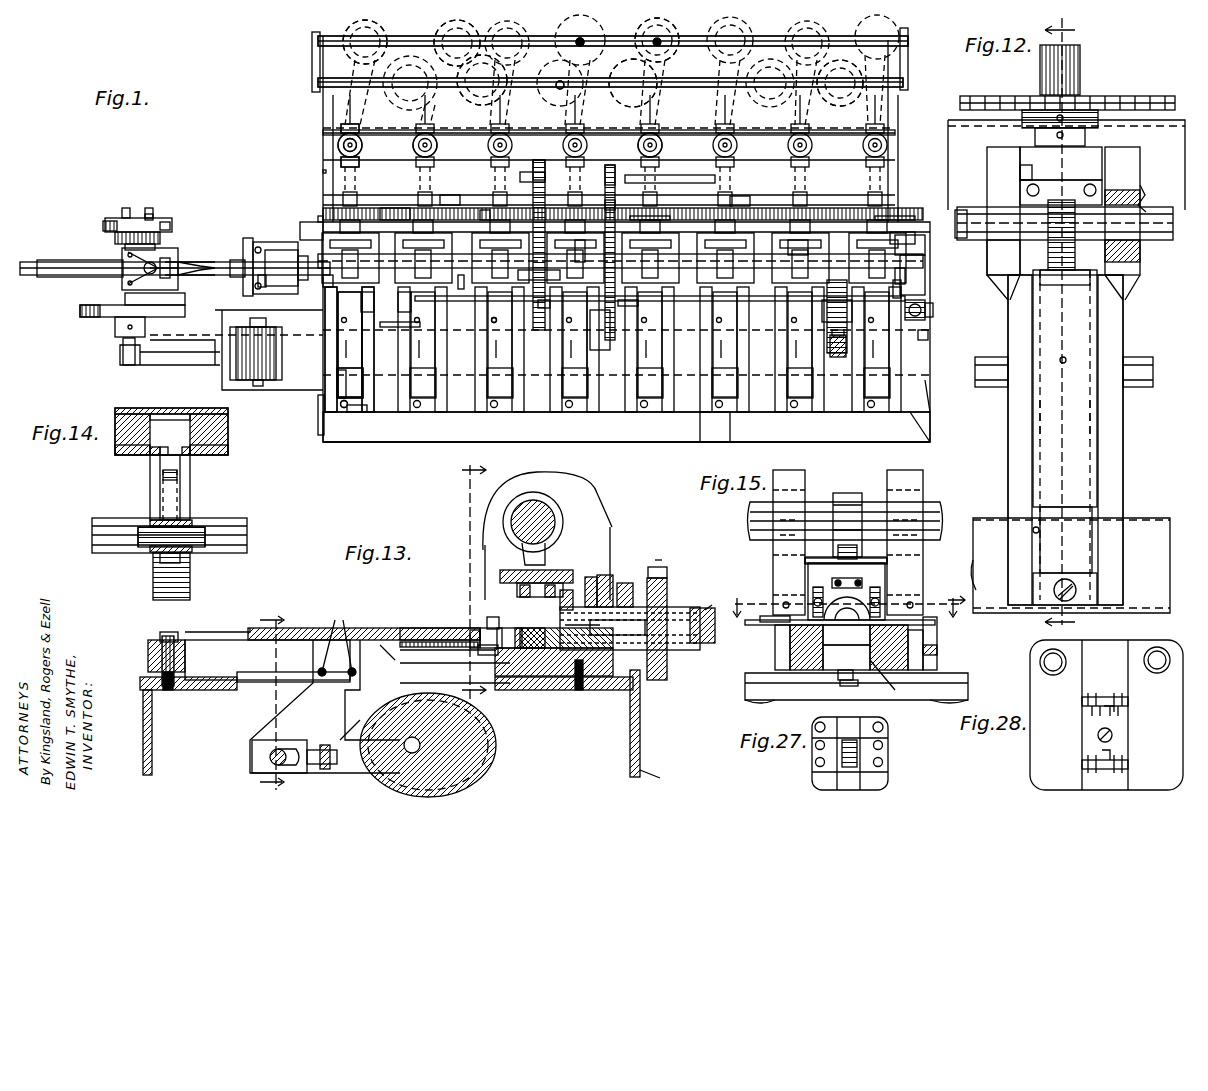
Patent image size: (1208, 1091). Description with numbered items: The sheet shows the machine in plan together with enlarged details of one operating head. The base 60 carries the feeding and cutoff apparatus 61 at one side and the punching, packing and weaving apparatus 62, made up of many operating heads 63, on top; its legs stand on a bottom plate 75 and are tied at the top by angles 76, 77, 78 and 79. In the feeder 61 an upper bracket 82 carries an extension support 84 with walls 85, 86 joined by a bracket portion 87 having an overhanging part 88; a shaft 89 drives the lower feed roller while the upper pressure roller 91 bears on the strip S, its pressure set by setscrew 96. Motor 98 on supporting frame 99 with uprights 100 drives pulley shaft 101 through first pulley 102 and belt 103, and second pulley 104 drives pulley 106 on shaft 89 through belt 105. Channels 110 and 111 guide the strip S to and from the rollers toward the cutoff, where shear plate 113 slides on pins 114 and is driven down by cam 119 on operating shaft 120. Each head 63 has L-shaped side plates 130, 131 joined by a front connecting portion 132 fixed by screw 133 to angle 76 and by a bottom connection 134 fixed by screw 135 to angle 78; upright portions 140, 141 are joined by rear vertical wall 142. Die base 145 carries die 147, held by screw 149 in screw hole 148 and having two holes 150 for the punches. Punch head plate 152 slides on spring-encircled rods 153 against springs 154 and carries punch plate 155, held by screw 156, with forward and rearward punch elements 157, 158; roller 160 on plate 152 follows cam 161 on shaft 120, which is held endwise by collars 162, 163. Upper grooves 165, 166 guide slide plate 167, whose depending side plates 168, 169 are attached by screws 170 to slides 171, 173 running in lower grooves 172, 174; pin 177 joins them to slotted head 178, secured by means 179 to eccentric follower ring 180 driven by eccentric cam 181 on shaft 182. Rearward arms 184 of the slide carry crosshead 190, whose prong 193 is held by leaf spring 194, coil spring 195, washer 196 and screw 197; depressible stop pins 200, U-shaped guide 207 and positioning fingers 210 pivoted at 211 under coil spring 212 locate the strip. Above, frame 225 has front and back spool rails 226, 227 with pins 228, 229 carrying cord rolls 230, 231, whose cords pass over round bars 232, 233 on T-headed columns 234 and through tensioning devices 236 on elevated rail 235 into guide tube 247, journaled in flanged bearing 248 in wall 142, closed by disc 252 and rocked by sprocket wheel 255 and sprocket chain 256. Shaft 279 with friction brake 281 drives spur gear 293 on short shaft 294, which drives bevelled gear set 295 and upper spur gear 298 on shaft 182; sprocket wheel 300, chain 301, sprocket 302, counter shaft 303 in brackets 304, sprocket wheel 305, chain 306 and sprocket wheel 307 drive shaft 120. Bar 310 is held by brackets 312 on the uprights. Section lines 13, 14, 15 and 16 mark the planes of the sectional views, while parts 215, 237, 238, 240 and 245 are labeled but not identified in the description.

In FIG. 1, the strip S is at (175, 255).
In FIG. 13, the strip S is at (452, 631).
In FIG. 12, the section line 13 is at (1065, 328).
In FIG. 13, the section line 14 is at (264, 696).
In FIG. 13, the section line 15 is at (467, 579).
In FIG. 12, the section line 16 is at (955, 593).
In FIG. 15, the section line 16 is at (847, 602).
In FIG. 1, the base 60 is at (340, 442).
In FIG. 13, the base 60 is at (656, 774).
In FIG. 15, the base 60 is at (740, 688).
In FIG. 1, the feeding and cutoff apparatus 61 is at (225, 220).
In FIG. 1, the punching, packing, and weaving apparatus 62 is at (325, 185).
In FIG. 13, the punching, packing, and weaving apparatus 62 is at (442, 565).
In FIG. 15, the punching, packing, and weaving apparatus 62 is at (750, 580).
In FIG. 1, the operating head 63 is at (626, 318).
In FIG. 12, the operating head 63 is at (1125, 325).
In FIG. 13, the operating head 63 is at (610, 522).
In FIG. 15, the operating head 63 is at (932, 499).
In FIG. 1, the bottom plate 75 is at (676, 400).
In FIG. 1, the angle 76 is at (709, 427).
In FIG. 12, the angle 76 is at (1145, 520).
In FIG. 13, the angle 76 is at (143, 762).
In FIG. 1, the angle 77 is at (925, 385).
In FIG. 1, the angle 78 is at (453, 190).
In FIG. 12, the angle 78 is at (1180, 122).
In FIG. 13, the angle 78 is at (640, 735).
In FIG. 15, the angle 78 is at (760, 692).
In FIG. 1, the angle 79 is at (318, 402).
In FIG. 1, the upper bracket 82 is at (250, 238).
In FIG. 1, the extension support 84 is at (195, 260).
In FIG. 1, the vertical wall 85 is at (190, 310).
In FIG. 1, the vertical wall 86 is at (165, 256).
In FIG. 1, the bracket portion 87 is at (130, 275).
In FIG. 1, the overhanging part 88 is at (160, 250).
In FIG. 1, the shaft 89 is at (150, 208).
In FIG. 1, the upper pressure roller 91 is at (190, 265).
In FIG. 1, the setscrew 96 is at (125, 262).
In FIG. 1, the motor 98 is at (240, 358).
In FIG. 1, the supporting frame 99 is at (170, 365).
In FIG. 1, the vertical uprights 100 is at (170, 345).
In FIG. 1, the pulley shaft 101 is at (127, 208).
In FIG. 1, the first pulley 102 is at (115, 325).
In FIG. 1, the belt 103 is at (80, 312).
In FIG. 1, the second pulley 104 is at (110, 218).
In FIG. 1, the belt 105 is at (103, 225).
In FIG. 1, the pulley 106 is at (167, 220).
In FIG. 1, the feeder channel 110 is at (70, 277).
In FIG. 1, the channel 111 is at (240, 238).
In FIG. 1, the shear plate 113 is at (280, 242).
In FIG. 1, the slide pins 114 is at (285, 243).
In FIG. 1, the cam 119 is at (258, 280).
In FIG. 1, the operating shaft 120 is at (633, 257).
In FIG. 12, the operating shaft 120 is at (1150, 240).
In FIG. 13, the operating shaft 120 is at (548, 508).
In FIG. 15, the operating shaft 120 is at (815, 502).
In FIG. 1, the side plate 130 is at (589, 380).
In FIG. 12, the side plate 130 is at (1012, 450).
In FIG. 13, the side plate 130 is at (232, 640).
In FIG. 14, the side plate 130 is at (115, 450).
In FIG. 15, the side plate 130 is at (790, 628).
In FIG. 1, the side plate 131 is at (661, 373).
In FIG. 12, the side plate 131 is at (1120, 454).
In FIG. 14, the side plate 131 is at (231, 462).
In FIG. 15, the side plate 131 is at (953, 645).
In FIG. 1, the front connecting portion 132 is at (653, 432).
In FIG. 12, the front connecting portion 132 is at (1090, 585).
In FIG. 13, the front connecting portion 132 is at (148, 656).
In FIG. 1, the screw 133 is at (622, 429).
In FIG. 12, the screw 133 is at (1053, 590).
In FIG. 13, the screw 133 is at (163, 685).
In FIG. 12, the bottom connection 134 is at (1020, 170).
In FIG. 13, the bottom connection 134 is at (566, 666).
In FIG. 14, the bottom connection 134 is at (163, 478).
In FIG. 15, the bottom connection 134 is at (897, 686).
In FIG. 13, the screw 135 is at (585, 690).
In FIG. 15, the screw 135 is at (845, 688).
In FIG. 1, the upright portion 140 is at (579, 262).
In FIG. 12, the upright portion 140 is at (987, 215).
In FIG. 13, the upright portion 140 is at (568, 542).
In FIG. 15, the upright portion 140 is at (795, 472).
In FIG. 1, the upright portion 141 is at (379, 294).
In FIG. 12, the upright portion 141 is at (1128, 178).
In FIG. 15, the upright portion 141 is at (900, 472).
In FIG. 1, the rear vertical wall 142 is at (910, 239).
In FIG. 12, the rear vertical wall 142 is at (1090, 155).
In FIG. 13, the rear vertical wall 142 is at (613, 575).
In FIG. 13, the die base 145 is at (500, 676).
In FIG. 15, the die base 145 is at (838, 676).
In FIG. 13, the die 147 is at (578, 690).
In FIG. 13, the screw hole 148 is at (517, 673).
In FIG. 13, the screw 149 is at (534, 628).
In FIG. 13, the holes 150 is at (589, 629).
In FIG. 1, the punch head plate 152 is at (793, 287).
In FIG. 12, the punch head plate 152 is at (1052, 190).
In FIG. 13, the punch head plate 152 is at (575, 580).
In FIG. 15, the punch head plate 152 is at (888, 567).
In FIG. 27, the punch head plate 152 is at (880, 780).
In FIG. 28, the punch head plate 152 is at (1035, 770).
In FIG. 12, the spring-encircled rods 153 is at (985, 172).
In FIG. 13, the spring-encircled rods 153 is at (595, 579).
In FIG. 15, the spring-encircled rods 153 is at (812, 600).
In FIG. 15, the springs 154 is at (880, 590).
In FIG. 13, the punch plate 155 is at (503, 572).
In FIG. 15, the punch plate 155 is at (805, 560).
In FIG. 28, the punch plate 155 is at (1125, 720).
In FIG. 13, the screw 156 is at (548, 572).
In FIG. 28, the screw 156 is at (1113, 738).
In FIG. 13, the forward punch element 157 is at (518, 590).
In FIG. 15, the forward punch element 157 is at (852, 597).
In FIG. 28, the forward punch element 157 is at (1100, 755).
In FIG. 13, the rearward punch element 158 is at (540, 595).
In FIG. 28, the rearward punch element 158 is at (1098, 712).
In FIG. 13, the roller 160 is at (520, 548).
In FIG. 15, the roller 160 is at (850, 543).
In FIG. 27, the roller 160 is at (845, 765).
In FIG. 1, the cam 161 is at (544, 264).
In FIG. 12, the cam 161 is at (1105, 270).
In FIG. 13, the cam 161 is at (520, 490).
In FIG. 15, the cam 161 is at (845, 493).
In FIG. 1, the collar 162 is at (310, 220).
In FIG. 1, the collar 163 is at (925, 275).
In FIG. 1, the upper groove 165 is at (458, 384).
In FIG. 12, the upper groove 165 is at (1032, 530).
In FIG. 13, the upper groove 165 is at (175, 626).
In FIG. 14, the upper groove 165 is at (115, 412).
In FIG. 15, the upper groove 165 is at (778, 640).
In FIG. 1, the upper groove 166 is at (533, 399).
In FIG. 12, the upper groove 166 is at (1093, 528).
In FIG. 14, the upper groove 166 is at (225, 414).
In FIG. 15, the upper groove 166 is at (925, 640).
In FIG. 1, the slide plate 167 is at (432, 346).
In FIG. 12, the slide plate 167 is at (1080, 418).
In FIG. 13, the slide plate 167 is at (310, 628).
In FIG. 14, the slide plate 167 is at (171, 420).
In FIG. 15, the slide plate 167 is at (846, 647).
In FIG. 13, the depending side plate 168 is at (312, 695).
In FIG. 14, the depending side plate 168 is at (160, 480).
In FIG. 14, the depending side plate 169 is at (190, 492).
In FIG. 13, the screws 170 is at (339, 639).
In FIG. 12, the slide 171 is at (1038, 408).
In FIG. 13, the slide 171 is at (293, 662).
In FIG. 14, the slide 171 is at (150, 452).
In FIG. 13, the lower groove 172 is at (235, 683).
In FIG. 14, the lower groove 172 is at (144, 463).
In FIG. 15, the lower groove 172 is at (790, 655).
In FIG. 12, the slide 173 is at (1092, 440).
In FIG. 14, the slide 173 is at (195, 455).
In FIG. 14, the groove 174 is at (225, 435).
In FIG. 15, the groove 174 is at (885, 670).
In FIG. 13, the pin 177 is at (270, 758).
In FIG. 14, the pin 177 is at (205, 535).
In FIG. 13, the slotted head 178 is at (265, 742).
In FIG. 14, the slotted head 178 is at (180, 560).
In FIG. 13, the securing means 179 is at (340, 765).
In FIG. 13, the eccentric follower ring 180 is at (490, 770).
In FIG. 14, the eccentric follower ring 180 is at (160, 578).
In FIG. 13, the eccentric cam 181 is at (460, 755).
In FIG. 1, the shaft 182 is at (542, 336).
In FIG. 12, the shaft 182 is at (1130, 360).
In FIG. 13, the shaft 182 is at (357, 721).
In FIG. 14, the shaft 182 is at (240, 525).
In FIG. 13, the arms 184 is at (488, 620).
In FIG. 1, the crosshead 190 is at (911, 288).
In FIG. 12, the crosshead 190 is at (1058, 270).
In FIG. 13, the crosshead 190 is at (480, 635).
In FIG. 15, the crosshead 190 is at (813, 595).
In FIG. 13, the prong 193 is at (484, 654).
In FIG. 13, the leaf spring 194 is at (385, 628).
In FIG. 13, the coil spring 195 is at (420, 640).
In FIG. 13, the washer 196 is at (395, 656).
In FIG. 1, the screw 197 is at (506, 332).
In FIG. 12, the screw 197 is at (1058, 358).
In FIG. 13, the screw 197 is at (437, 624).
In FIG. 1, the stop pins 200 is at (323, 285).
In FIG. 12, the stop pins 200 is at (1005, 283).
In FIG. 12, the U-shaped guide 207 is at (960, 210).
In FIG. 15, the U-shaped guide 207 is at (763, 630).
In FIG. 15, the positioning fingers 210 is at (937, 650).
In FIG. 15, the pivot 211 is at (937, 660).
In FIG. 12, the coil spring 212 is at (1157, 192).
In FIG. 15, the pin 215 is at (783, 605).
In FIG. 1, the frame 225 is at (323, 132).
In FIG. 1, the front spool rail 226 is at (633, 86).
In FIG. 1, the back spool rail 227 is at (642, 36).
In FIG. 1, the pins 228 is at (565, 85).
In FIG. 1, the pins 229 is at (578, 40).
In FIG. 1, the supply roll of cord 230 is at (588, 95).
In FIG. 1, the supply roll of cord 231 is at (640, 98).
In FIG. 1, the round bar 232 is at (644, 88).
In FIG. 1, the round bar 233 is at (689, 38).
In FIG. 1, the T-headed columns 234 is at (318, 80).
In FIG. 1, the elevated support rail 235 is at (840, 91).
In FIG. 1, the tensioning devices 236 is at (360, 135).
In FIG. 1, the pulley hub 237 is at (362, 147).
In FIG. 1, the pulley 238 is at (456, 145).
In FIG. 1, the bracket 240 is at (639, 135).
In FIG. 1, the bracket 245 is at (553, 139).
In FIG. 1, the guide tube 247 is at (320, 215).
In FIG. 12, the guide tube 247 is at (1082, 62).
In FIG. 13, the guide tube 247 is at (630, 636).
In FIG. 15, the guide tube 247 is at (835, 578).
In FIG. 1, the flanged bearing 248 is at (912, 235).
In FIG. 12, the flanged bearing 248 is at (1055, 130).
In FIG. 13, the flanged bearing 248 is at (625, 583).
In FIG. 13, the disc 252 is at (627, 627).
In FIG. 1, the sprocket wheel 255 is at (408, 205).
In FIG. 12, the sprocket wheel 255 is at (1092, 96).
In FIG. 13, the sprocket wheel 255 is at (680, 571).
In FIG. 15, the sprocket wheel 255 is at (702, 605).
In FIG. 1, the sprocket chain 256 is at (756, 191).
In FIG. 12, the sprocket chain 256 is at (1100, 115).
In FIG. 13, the sprocket chain 256 is at (665, 570).
In FIG. 1, the shaft 279 is at (930, 312).
In FIG. 1, the friction brake 281 is at (922, 340).
In FIG. 1, the spur gear 293 is at (838, 358).
In FIG. 1, the short shaft 294 is at (925, 305).
In FIG. 1, the bevelled gear set 295 is at (796, 339).
In FIG. 1, the upper spur gear 298 is at (827, 330).
In FIG. 1, the sprocket wheel 300 is at (606, 340).
In FIG. 1, the sprocket chain 301 is at (623, 202).
In FIG. 1, the sprocket 302 is at (610, 160).
In FIG. 1, the counter shaft 303 is at (700, 175).
In FIG. 1, the brackets 304 is at (624, 190).
In FIG. 1, the sprocket wheel 305 is at (540, 160).
In FIG. 1, the sprocket chain 306 is at (520, 180).
In FIG. 1, the sprocket wheel 307 is at (564, 322).
In FIG. 1, the bar 310 is at (640, 317).
In FIG. 1, the bracket 312 is at (893, 290).